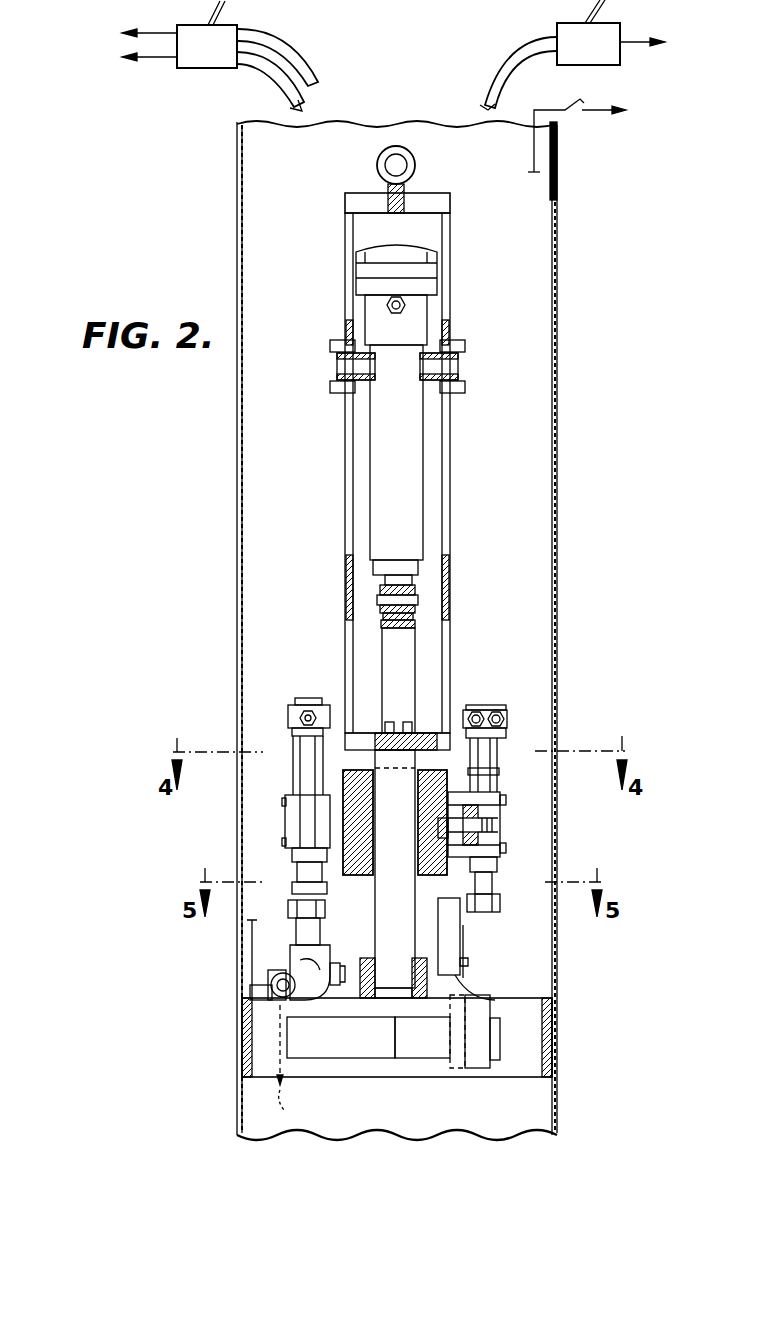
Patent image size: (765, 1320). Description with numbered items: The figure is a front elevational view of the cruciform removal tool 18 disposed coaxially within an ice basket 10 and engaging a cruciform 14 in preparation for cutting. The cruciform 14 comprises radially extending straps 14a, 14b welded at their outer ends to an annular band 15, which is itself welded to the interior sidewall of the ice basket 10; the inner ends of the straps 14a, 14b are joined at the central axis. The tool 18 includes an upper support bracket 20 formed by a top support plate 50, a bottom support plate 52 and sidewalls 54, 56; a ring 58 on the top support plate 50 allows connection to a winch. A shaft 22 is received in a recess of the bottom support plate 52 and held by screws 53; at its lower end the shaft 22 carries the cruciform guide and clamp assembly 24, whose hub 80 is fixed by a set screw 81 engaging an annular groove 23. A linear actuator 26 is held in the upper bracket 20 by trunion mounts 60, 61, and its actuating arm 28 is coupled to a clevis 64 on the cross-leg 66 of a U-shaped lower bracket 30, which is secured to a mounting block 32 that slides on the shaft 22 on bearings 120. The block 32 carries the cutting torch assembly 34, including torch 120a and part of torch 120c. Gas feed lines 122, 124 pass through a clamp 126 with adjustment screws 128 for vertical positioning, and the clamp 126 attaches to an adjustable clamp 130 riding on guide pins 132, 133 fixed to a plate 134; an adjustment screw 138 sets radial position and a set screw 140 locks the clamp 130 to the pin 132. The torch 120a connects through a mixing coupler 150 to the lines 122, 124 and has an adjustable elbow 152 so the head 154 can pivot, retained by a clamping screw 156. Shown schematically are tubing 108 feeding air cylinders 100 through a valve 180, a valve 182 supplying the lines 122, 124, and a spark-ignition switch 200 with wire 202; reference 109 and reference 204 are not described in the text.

The ice basket 10 is at (237, 238).
The cruciform 14 is at (383, 1087).
The strap 14a is at (343, 1060).
The strap 14b is at (445, 1055).
The annular band 15 is at (303, 1080).
The cruciform removal tool 18 is at (321, 205).
The upper support bracket 20 is at (366, 186).
The shaft 22 is at (385, 915).
The annular groove 23 is at (392, 1003).
The cruciform guide and clamp assembly 24 is at (505, 985).
The linear actuator 26 is at (415, 429).
The actuating arm 28 is at (380, 581).
The lower bracket 30 is at (412, 681).
The mounting block 32 is at (362, 875).
The cutting torch assembly 34 is at (259, 737).
The top support plate 50 is at (448, 193).
The bottom support plate 52 is at (446, 735).
The screws 53 is at (393, 722).
The sidewall 54 is at (450, 236).
The sidewall 56 is at (345, 242).
The ring 58 is at (406, 154).
The trunion mount 60 is at (450, 378).
The trunion mount 61 is at (335, 375).
The clevis 64 is at (380, 615).
The cross-leg 66 is at (408, 630).
The hub 80 is at (422, 975).
The set screw 81 is at (421, 1000).
The air cylinders 100 is at (492, 1037).
The tubing 108 is at (504, 61).
The conduit branch 109 is at (468, 978).
The bearings 120 is at (445, 770).
The torch 120a is at (268, 992).
The torch 120c is at (490, 895).
The gas feed line 122 is at (308, 55).
The gas feed line 124 is at (292, 78).
The clamp 126 is at (295, 807).
The adjustment screws 128 is at (285, 800).
The adjustable clamp 130 is at (495, 880).
The guide pin 132 is at (486, 796).
The guide pin 133 is at (483, 852).
The plate 134 is at (450, 842).
The adjustment screw 138 is at (495, 825).
The set screw 140 is at (480, 773).
The mixing coupler 150 is at (288, 920).
The adjustable elbow 152 is at (290, 960).
The head 154 is at (275, 1020).
The clamping screw 156 is at (268, 985).
The valve 180 is at (597, 61).
The valve 182 is at (215, 67).
The switch 200 is at (576, 97).
The wire 202 is at (548, 157).
The fitting 204 is at (262, 1000).